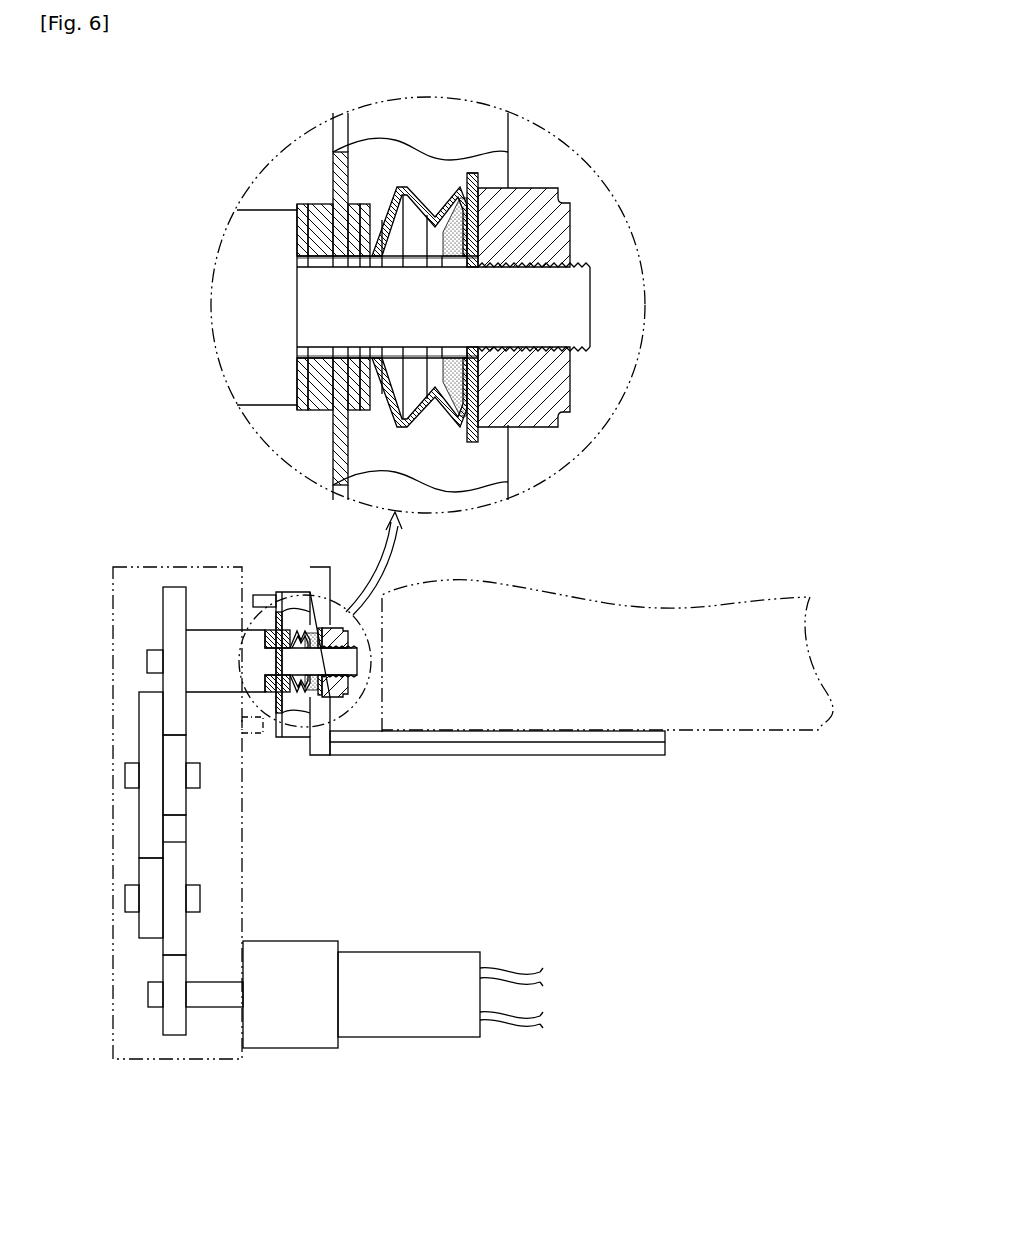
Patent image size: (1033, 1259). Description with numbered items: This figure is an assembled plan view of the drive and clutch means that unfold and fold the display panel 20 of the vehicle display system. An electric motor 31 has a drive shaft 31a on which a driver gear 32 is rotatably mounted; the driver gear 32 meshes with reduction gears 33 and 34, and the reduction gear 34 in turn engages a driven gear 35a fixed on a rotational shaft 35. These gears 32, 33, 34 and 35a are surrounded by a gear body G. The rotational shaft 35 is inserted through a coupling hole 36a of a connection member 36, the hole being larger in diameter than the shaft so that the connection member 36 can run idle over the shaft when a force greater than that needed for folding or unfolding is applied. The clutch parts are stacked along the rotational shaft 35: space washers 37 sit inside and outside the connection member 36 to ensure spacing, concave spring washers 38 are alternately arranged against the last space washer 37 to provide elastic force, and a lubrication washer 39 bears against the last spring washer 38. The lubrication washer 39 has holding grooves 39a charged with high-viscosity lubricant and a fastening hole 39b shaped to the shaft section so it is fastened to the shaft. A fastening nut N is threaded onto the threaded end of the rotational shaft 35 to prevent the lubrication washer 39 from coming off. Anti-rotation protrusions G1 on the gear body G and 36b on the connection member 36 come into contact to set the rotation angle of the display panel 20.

The display panel 20 is at (650, 606).
The electric motor 31 is at (378, 952).
The drive shaft 31a is at (208, 1008).
The driver gear 32 is at (163, 972).
The reduction gear 33 is at (139, 872).
The reduction gear 34 is at (139, 742).
The rotational shaft 35 is at (562, 303).
The driven gear 35a is at (163, 624).
The connection member 36 is at (488, 125).
The coupling hole 36a is at (340, 268).
The anti-rotation protrusion 36b is at (265, 595).
The space washers 37 is at (322, 204).
The spring washers 38 is at (456, 187).
The lubrication washer 39 is at (478, 178).
The holding grooves 39a is at (458, 268).
The fastening hole 39b is at (472, 268).
The gear body G is at (167, 567).
The anti-rotation protrusion G1 is at (255, 735).
The fastening nut N is at (548, 196).